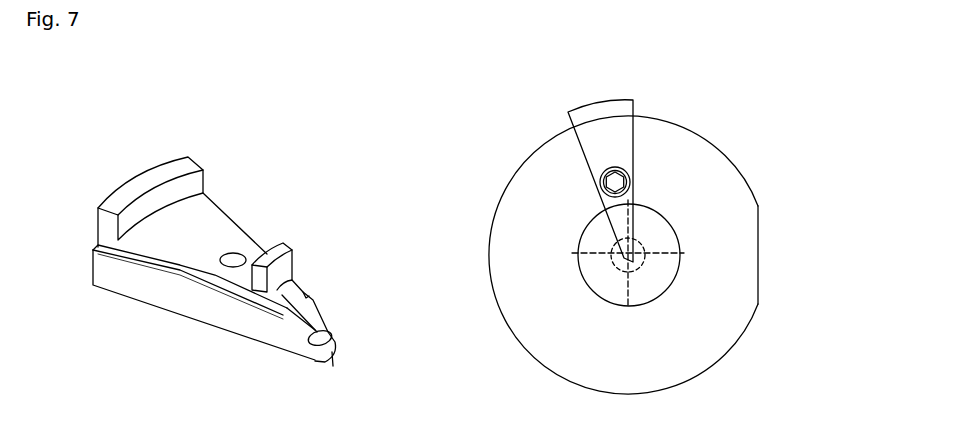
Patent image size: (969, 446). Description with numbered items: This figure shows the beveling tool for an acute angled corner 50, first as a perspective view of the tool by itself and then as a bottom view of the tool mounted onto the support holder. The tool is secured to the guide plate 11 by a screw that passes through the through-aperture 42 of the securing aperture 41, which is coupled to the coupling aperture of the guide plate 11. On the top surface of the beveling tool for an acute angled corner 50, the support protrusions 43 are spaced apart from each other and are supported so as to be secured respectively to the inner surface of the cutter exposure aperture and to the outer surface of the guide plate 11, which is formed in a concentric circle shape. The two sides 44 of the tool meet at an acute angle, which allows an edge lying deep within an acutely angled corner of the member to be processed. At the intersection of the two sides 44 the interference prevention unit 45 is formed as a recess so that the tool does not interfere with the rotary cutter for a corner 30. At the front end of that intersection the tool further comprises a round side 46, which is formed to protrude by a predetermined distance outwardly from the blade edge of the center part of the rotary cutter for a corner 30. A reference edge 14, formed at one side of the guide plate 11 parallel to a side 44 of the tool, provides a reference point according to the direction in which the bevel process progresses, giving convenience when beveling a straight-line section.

The guide plate 11 is at (713, 192).
The reference edge 14 is at (762, 253).
The rotary cutter for a corner 30 is at (617, 263).
The securing aperture 41 is at (610, 184).
The through-aperture 42 is at (236, 256).
The support protrusions 43 is at (138, 195).
The sides 44 is at (153, 292).
The interference prevention unit 45 is at (313, 327).
The round side 46 is at (330, 356).
The beveling tool for an acute angled corner 50 is at (600, 128).